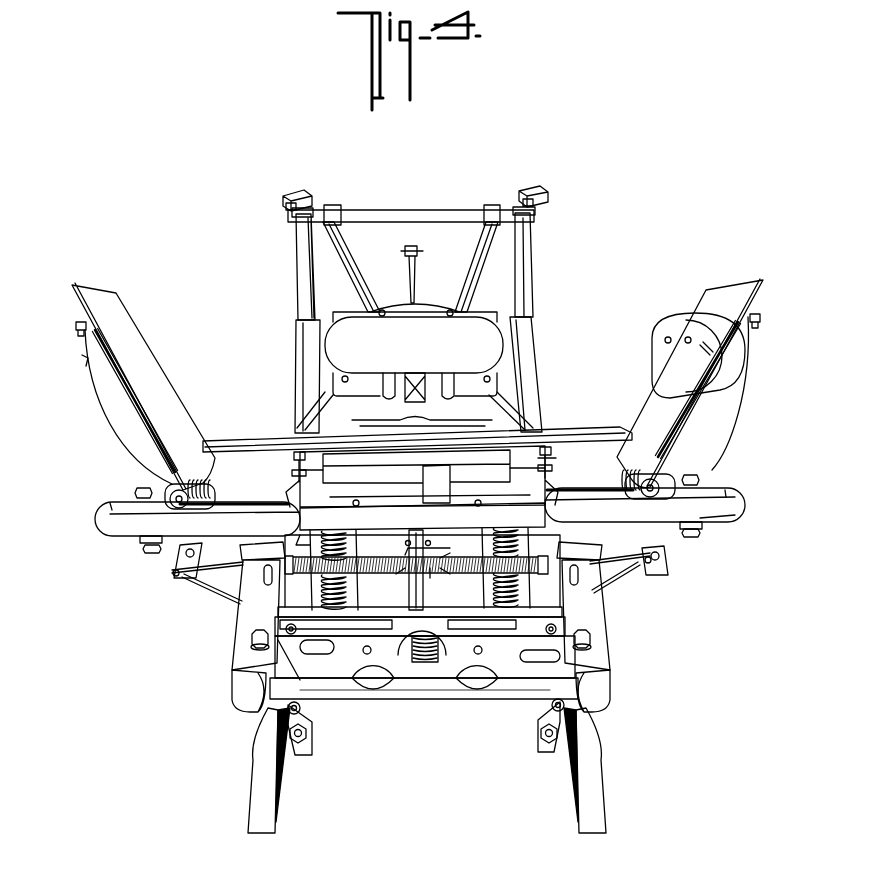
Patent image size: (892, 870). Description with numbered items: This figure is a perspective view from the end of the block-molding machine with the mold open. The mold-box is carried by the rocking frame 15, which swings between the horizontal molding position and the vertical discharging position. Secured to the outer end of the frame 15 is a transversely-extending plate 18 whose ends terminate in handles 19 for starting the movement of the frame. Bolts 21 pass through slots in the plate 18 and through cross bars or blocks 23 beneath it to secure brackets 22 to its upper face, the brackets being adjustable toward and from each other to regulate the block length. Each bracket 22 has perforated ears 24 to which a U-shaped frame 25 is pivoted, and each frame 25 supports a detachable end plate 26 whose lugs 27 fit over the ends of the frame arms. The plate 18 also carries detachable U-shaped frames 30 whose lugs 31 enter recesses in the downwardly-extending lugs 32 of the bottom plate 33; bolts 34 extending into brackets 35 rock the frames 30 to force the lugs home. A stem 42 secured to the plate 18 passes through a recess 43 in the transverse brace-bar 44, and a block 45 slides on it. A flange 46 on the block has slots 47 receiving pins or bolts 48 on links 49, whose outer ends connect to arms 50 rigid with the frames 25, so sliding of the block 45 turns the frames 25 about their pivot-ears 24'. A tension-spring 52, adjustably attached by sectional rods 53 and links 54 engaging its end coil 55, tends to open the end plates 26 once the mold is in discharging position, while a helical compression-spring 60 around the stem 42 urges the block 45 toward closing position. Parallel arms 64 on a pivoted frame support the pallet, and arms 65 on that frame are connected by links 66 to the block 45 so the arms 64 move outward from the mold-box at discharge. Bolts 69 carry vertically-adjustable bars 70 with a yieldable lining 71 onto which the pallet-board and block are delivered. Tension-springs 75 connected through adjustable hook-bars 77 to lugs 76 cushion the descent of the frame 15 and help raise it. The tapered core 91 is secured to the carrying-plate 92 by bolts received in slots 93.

The rocking frame 15 is at (292, 521).
The transversely-extending plate 18 is at (712, 517).
The handles 19 is at (96, 520).
The bolts 21 is at (138, 491).
The brackets 22 is at (120, 504).
The cross bars or blocks 23 is at (141, 542).
The perforated ears 24 is at (420, 481).
The pivot-ears 24' is at (414, 474).
The U-shaped frame 25 is at (112, 412).
The end plates 26 is at (118, 300).
The lugs 27 is at (78, 327).
The detachable U-shaped frames 30 is at (346, 481).
The lugs 31 is at (284, 456).
The downwardly-extending lugs 32 is at (312, 458).
The bottom plate 33 is at (592, 432).
The bolts 34 is at (550, 456).
The brackets 35 is at (560, 486).
The stem 42 is at (414, 584).
The recess 43 is at (400, 665).
The transverse brace-bar 44 is at (496, 655).
The block 45 is at (450, 608).
The flange 46 is at (428, 632).
The slots 47 is at (372, 658).
The pins or bolts 48 is at (286, 628).
The links 49 is at (222, 582).
The arms 50 is at (176, 573).
The tension-spring 52 is at (447, 560).
The sectional rods 53 is at (222, 566).
The links 54 is at (176, 577).
The end coil 55 is at (342, 562).
The helical compression-spring 60 is at (428, 664).
The parallel arms 64 is at (298, 357).
The arms 65 is at (342, 550).
The links 66 is at (326, 591).
The bolts 69 is at (296, 213).
The vertically-adjustable bars 70 is at (286, 204).
The lining or covering 71 is at (302, 193).
The tension-springs 75 is at (497, 552).
The lugs 76 is at (306, 737).
The adjustable hook-bars 77 is at (288, 711).
The core 91 is at (414, 345).
The carrying-plate 92 is at (479, 312).
The slots 93 is at (386, 392).